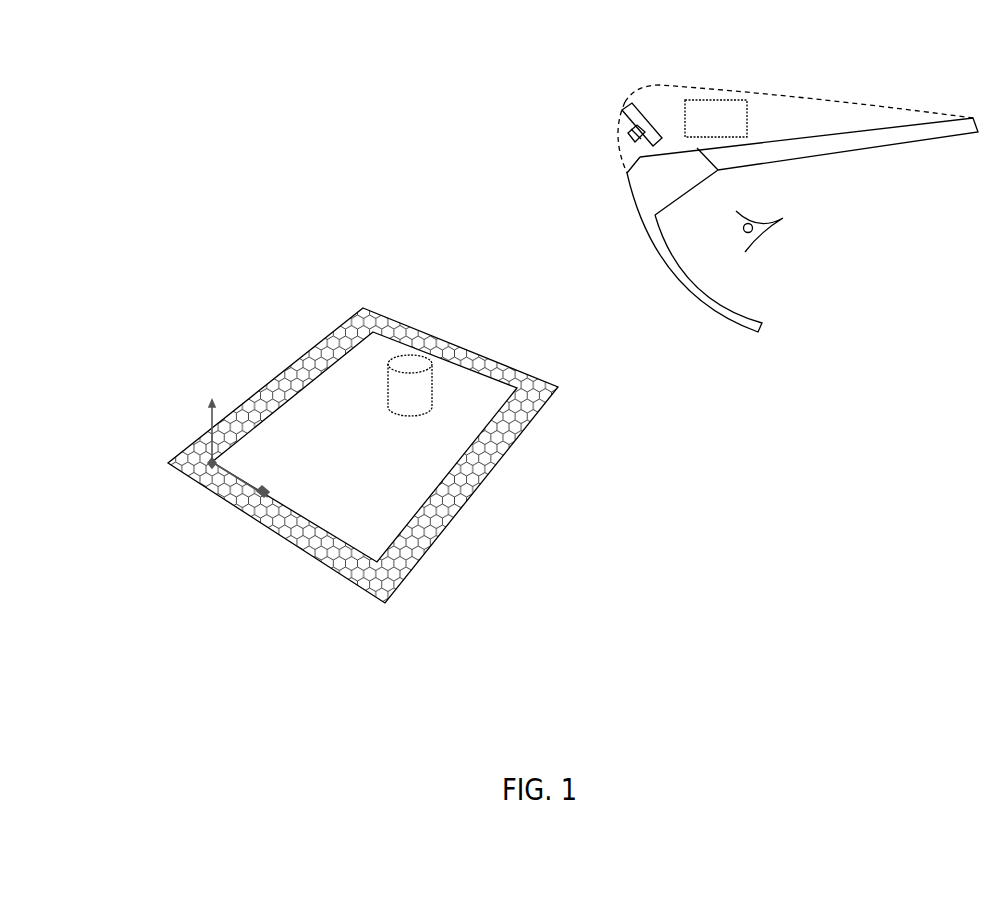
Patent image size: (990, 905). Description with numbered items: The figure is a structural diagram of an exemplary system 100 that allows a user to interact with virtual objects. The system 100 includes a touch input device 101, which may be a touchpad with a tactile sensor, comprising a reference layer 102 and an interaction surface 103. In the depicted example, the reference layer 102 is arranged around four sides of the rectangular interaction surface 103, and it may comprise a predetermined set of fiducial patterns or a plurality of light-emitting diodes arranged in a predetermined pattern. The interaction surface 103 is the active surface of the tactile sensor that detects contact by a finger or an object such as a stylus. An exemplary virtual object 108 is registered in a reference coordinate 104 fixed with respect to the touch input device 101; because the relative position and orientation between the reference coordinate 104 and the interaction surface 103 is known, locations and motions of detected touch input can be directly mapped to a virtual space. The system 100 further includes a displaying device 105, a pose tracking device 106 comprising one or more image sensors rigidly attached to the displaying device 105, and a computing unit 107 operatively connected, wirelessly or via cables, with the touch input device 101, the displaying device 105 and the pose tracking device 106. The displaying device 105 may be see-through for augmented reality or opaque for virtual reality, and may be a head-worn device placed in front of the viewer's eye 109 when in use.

The system 100 is at (800, 535).
The touch input device 101 is at (540, 422).
The reference layer 102 is at (444, 513).
The interaction surface 103 is at (338, 413).
The reference coordinate 104 is at (208, 462).
The displaying device 105 is at (654, 192).
The pose tracking device 106 is at (631, 115).
The computing unit 107 is at (750, 118).
The virtual object 108 is at (422, 378).
The viewer's eye 109 is at (768, 242).